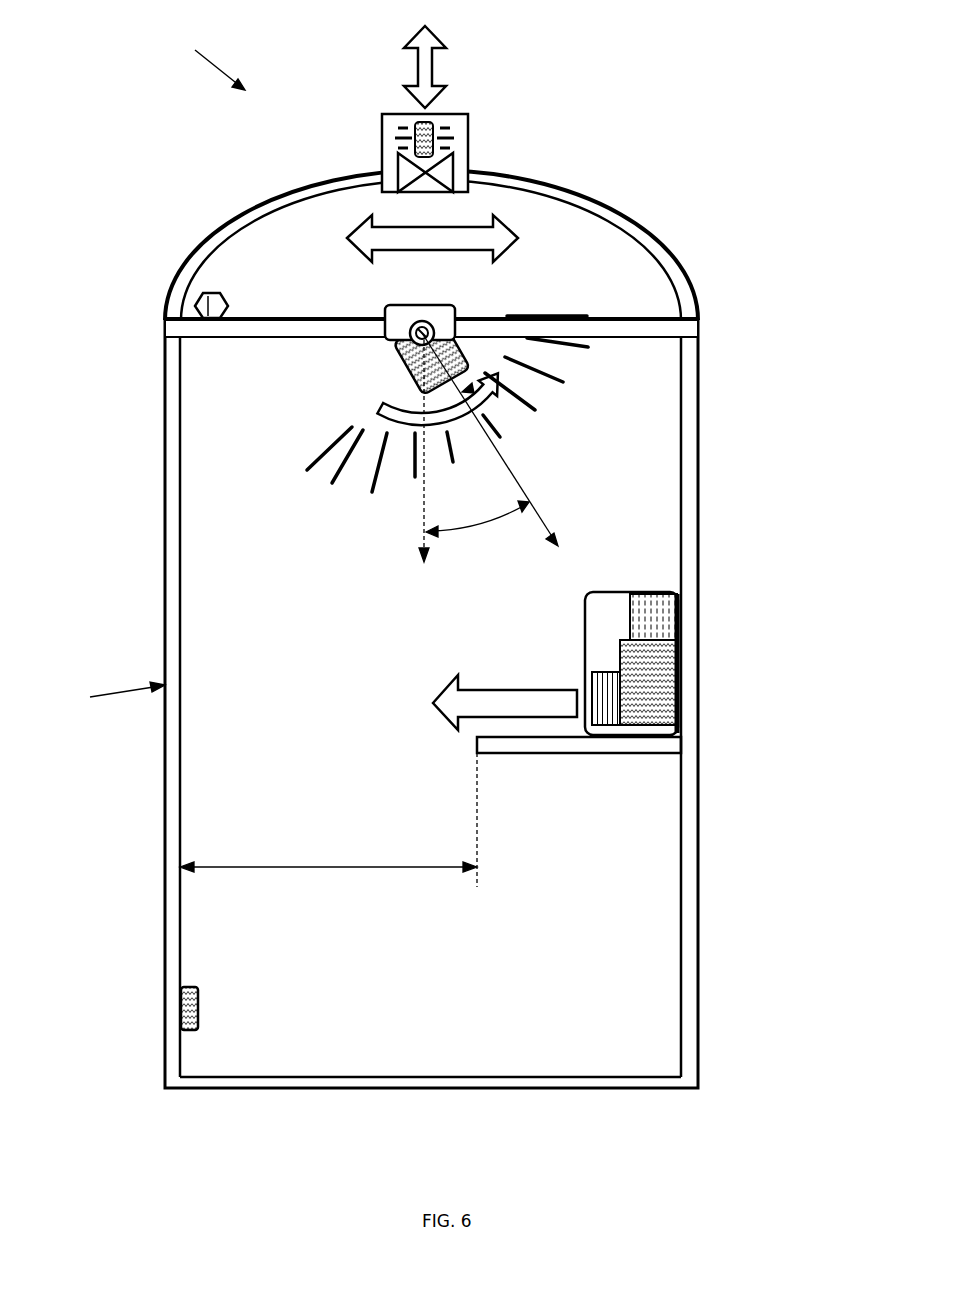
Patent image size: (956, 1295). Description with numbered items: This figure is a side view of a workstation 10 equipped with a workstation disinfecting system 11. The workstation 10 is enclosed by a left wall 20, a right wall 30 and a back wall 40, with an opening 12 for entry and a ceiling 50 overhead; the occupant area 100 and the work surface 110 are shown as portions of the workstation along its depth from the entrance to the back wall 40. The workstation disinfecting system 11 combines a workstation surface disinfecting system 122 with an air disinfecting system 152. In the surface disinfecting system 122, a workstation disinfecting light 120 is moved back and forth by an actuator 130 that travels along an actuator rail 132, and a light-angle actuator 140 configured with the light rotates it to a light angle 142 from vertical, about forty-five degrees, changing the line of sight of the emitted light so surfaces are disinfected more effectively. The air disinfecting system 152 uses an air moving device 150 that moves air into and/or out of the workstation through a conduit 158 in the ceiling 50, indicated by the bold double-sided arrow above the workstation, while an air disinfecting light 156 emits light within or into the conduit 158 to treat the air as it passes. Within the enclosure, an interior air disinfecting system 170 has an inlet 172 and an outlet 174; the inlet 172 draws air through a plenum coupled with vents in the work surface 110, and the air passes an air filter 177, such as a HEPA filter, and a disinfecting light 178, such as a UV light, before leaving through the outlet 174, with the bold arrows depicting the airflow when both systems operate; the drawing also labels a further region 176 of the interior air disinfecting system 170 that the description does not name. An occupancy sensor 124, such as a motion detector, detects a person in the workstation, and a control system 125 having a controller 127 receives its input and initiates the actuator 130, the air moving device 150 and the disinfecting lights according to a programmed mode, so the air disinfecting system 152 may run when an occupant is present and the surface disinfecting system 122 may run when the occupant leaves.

The workstation 10 is at (690, 385).
The workstation disinfecting system 11 is at (209, 63).
The opening 12 is at (113, 694).
The left wall 20 is at (195, 512).
The right wall 30 is at (655, 478).
The back wall 40 is at (690, 1005).
The ceiling 50 is at (652, 258).
The occupant area 100 is at (302, 865).
The work surface 110 is at (518, 755).
The workstation disinfecting light 120 is at (403, 367).
The workstation surface disinfecting system 122 is at (455, 318).
The occupancy sensor 124 is at (180, 1012).
The control system 125 is at (195, 297).
The controller 127 is at (205, 290).
The actuator 130 is at (385, 312).
The actuator rail 132 is at (243, 327).
The light-angle actuator 140 is at (435, 325).
The light angle 142 is at (490, 528).
The air moving device 150 is at (447, 175).
The air disinfecting system 152 is at (400, 148).
The air disinfecting light 156 is at (398, 130).
The conduit 158 is at (455, 123).
The interior air disinfecting system 170 is at (597, 612).
The inlet 172 is at (665, 592).
The outlet 174 is at (592, 680).
The compartment 176 is at (620, 605).
The air filter 177 is at (655, 618).
The disinfecting light 178 is at (655, 690).